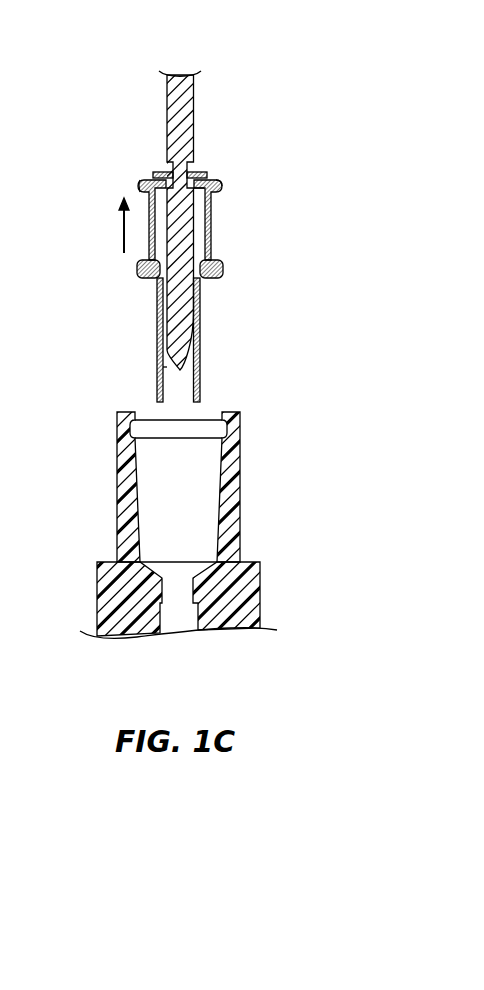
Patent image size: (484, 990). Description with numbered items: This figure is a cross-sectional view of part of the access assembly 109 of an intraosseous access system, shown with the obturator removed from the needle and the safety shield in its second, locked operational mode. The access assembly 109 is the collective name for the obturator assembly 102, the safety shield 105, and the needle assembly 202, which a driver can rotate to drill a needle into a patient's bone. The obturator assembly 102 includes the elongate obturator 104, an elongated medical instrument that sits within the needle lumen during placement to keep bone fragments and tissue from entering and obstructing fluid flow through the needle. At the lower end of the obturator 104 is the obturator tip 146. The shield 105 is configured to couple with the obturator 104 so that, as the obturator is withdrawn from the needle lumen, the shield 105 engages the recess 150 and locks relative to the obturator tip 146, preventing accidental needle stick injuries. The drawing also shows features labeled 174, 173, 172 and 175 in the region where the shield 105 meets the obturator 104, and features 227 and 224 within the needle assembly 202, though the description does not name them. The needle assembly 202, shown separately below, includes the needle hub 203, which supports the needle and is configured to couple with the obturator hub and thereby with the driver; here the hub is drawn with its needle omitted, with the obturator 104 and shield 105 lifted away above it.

The access assembly 109 is at (299, 101).
The obturator assembly 102 is at (155, 114).
The proximal flange 174 is at (163, 165).
The stopper lip 173 is at (138, 182).
The recess 150 is at (198, 166).
The rim 172 is at (219, 179).
The groove 175 is at (199, 188).
The obturator 104 is at (190, 233).
The safety shield 105 is at (205, 350).
The obturator tip 146 is at (190, 370).
The needle assembly 202 is at (110, 503).
The groove 227 is at (218, 428).
The chamber 224 is at (192, 495).
The needle hub 203 is at (127, 550).